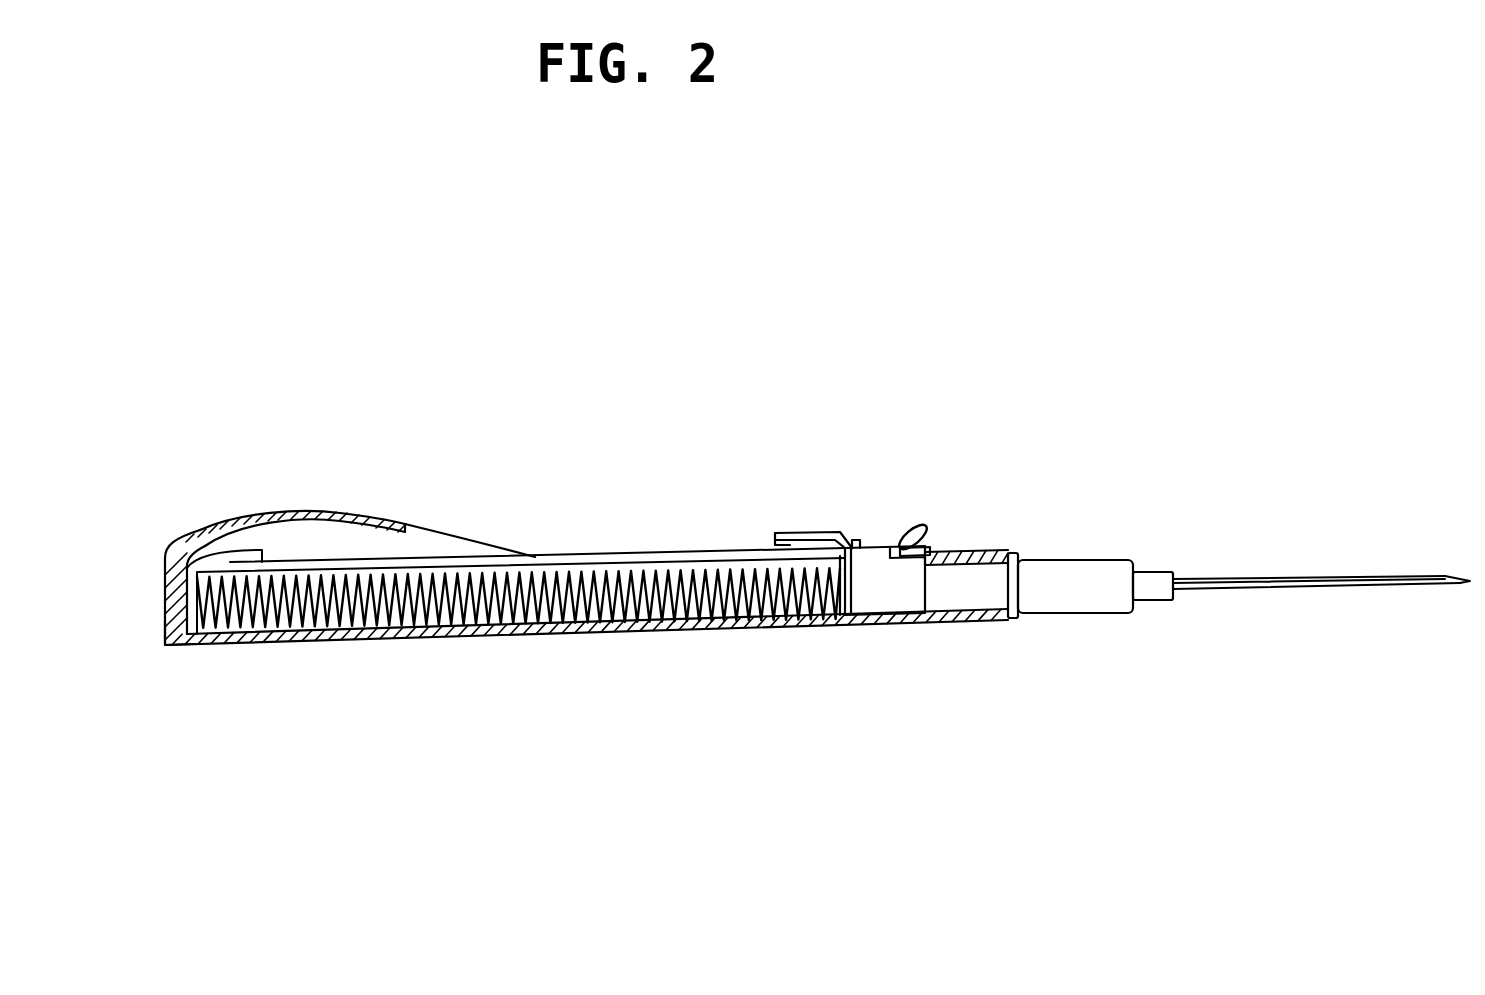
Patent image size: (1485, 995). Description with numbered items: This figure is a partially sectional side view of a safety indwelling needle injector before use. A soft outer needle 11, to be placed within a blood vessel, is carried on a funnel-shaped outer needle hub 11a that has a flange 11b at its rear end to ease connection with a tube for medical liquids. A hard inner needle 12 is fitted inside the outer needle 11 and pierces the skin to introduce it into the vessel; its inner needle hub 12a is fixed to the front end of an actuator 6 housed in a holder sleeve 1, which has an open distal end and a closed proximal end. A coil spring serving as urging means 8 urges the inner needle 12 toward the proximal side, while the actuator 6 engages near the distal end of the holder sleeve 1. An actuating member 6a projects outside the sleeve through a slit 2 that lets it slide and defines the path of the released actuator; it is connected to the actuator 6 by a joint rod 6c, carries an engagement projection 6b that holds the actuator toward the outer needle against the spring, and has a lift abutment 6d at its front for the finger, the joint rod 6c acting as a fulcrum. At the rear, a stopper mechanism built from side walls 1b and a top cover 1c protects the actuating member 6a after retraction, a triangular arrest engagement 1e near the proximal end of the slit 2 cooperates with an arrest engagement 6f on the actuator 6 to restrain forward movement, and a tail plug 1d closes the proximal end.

The holder sleeve 1 is at (593, 635).
The side walls 1b is at (468, 540).
The top cover 1c is at (385, 520).
The tail plug 1d is at (170, 618).
The arrest engagement 1e is at (257, 548).
The slit 2 is at (643, 553).
The actuator 6 is at (878, 600).
The actuating member 6a is at (866, 470).
The engagement projection 6b is at (915, 551).
The joint rod 6c is at (820, 550).
The lift abutment 6d is at (927, 537).
The arrest engagement 6f is at (775, 548).
The urging means 8 is at (740, 633).
The outer needle 11 is at (1305, 590).
The outer needle hub 11a is at (1107, 612).
The flange 11b is at (1013, 615).
The inner needle 12 is at (1452, 590).
The inner needle hub 12a is at (962, 598).